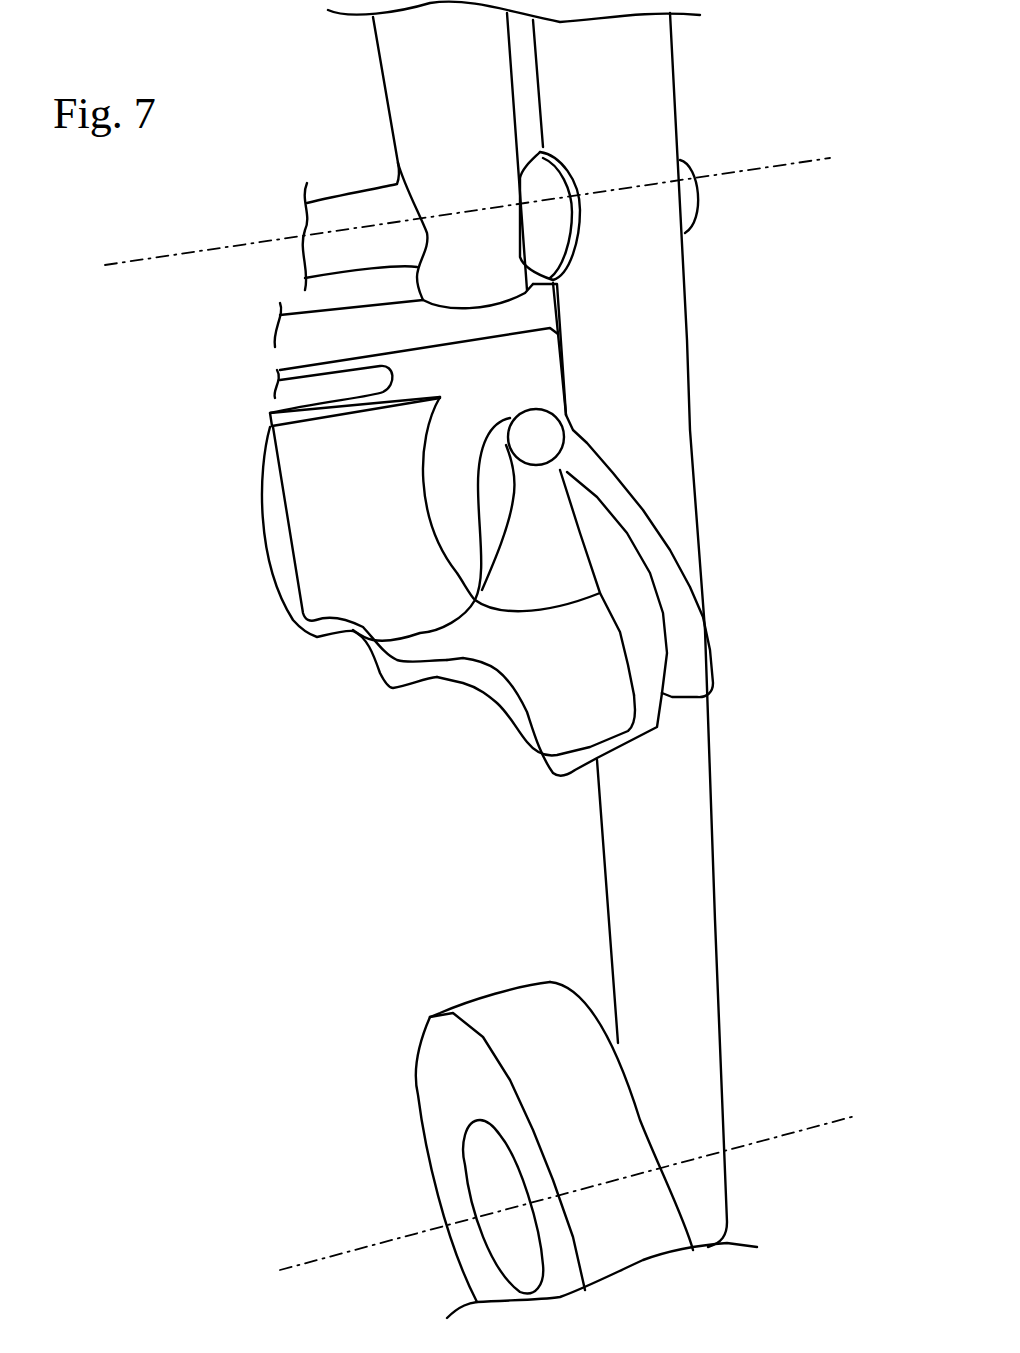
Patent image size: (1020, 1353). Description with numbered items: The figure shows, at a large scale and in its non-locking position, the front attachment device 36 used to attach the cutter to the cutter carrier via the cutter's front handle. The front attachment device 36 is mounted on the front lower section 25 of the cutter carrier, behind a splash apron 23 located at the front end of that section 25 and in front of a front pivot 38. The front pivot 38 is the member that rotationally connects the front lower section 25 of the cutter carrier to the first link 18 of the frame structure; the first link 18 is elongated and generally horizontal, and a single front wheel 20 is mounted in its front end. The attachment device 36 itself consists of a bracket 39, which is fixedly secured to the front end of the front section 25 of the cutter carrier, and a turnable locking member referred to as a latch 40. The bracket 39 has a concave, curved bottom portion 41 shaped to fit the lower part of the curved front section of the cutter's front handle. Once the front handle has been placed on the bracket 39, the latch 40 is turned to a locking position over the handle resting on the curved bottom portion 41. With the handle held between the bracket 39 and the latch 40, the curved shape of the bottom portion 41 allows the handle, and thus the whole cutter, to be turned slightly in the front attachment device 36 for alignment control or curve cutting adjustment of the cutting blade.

The first link 18 is at (673, 98).
The front wheel 20 is at (453, 1053).
The splash apron 23 is at (300, 350).
The front lower section 25 is at (397, 97).
The front attachment device 36 is at (155, 663).
The front pivot 38 is at (700, 196).
The bracket 39 is at (350, 637).
The latch 40 is at (677, 650).
The curved bottom portion 41 is at (553, 703).